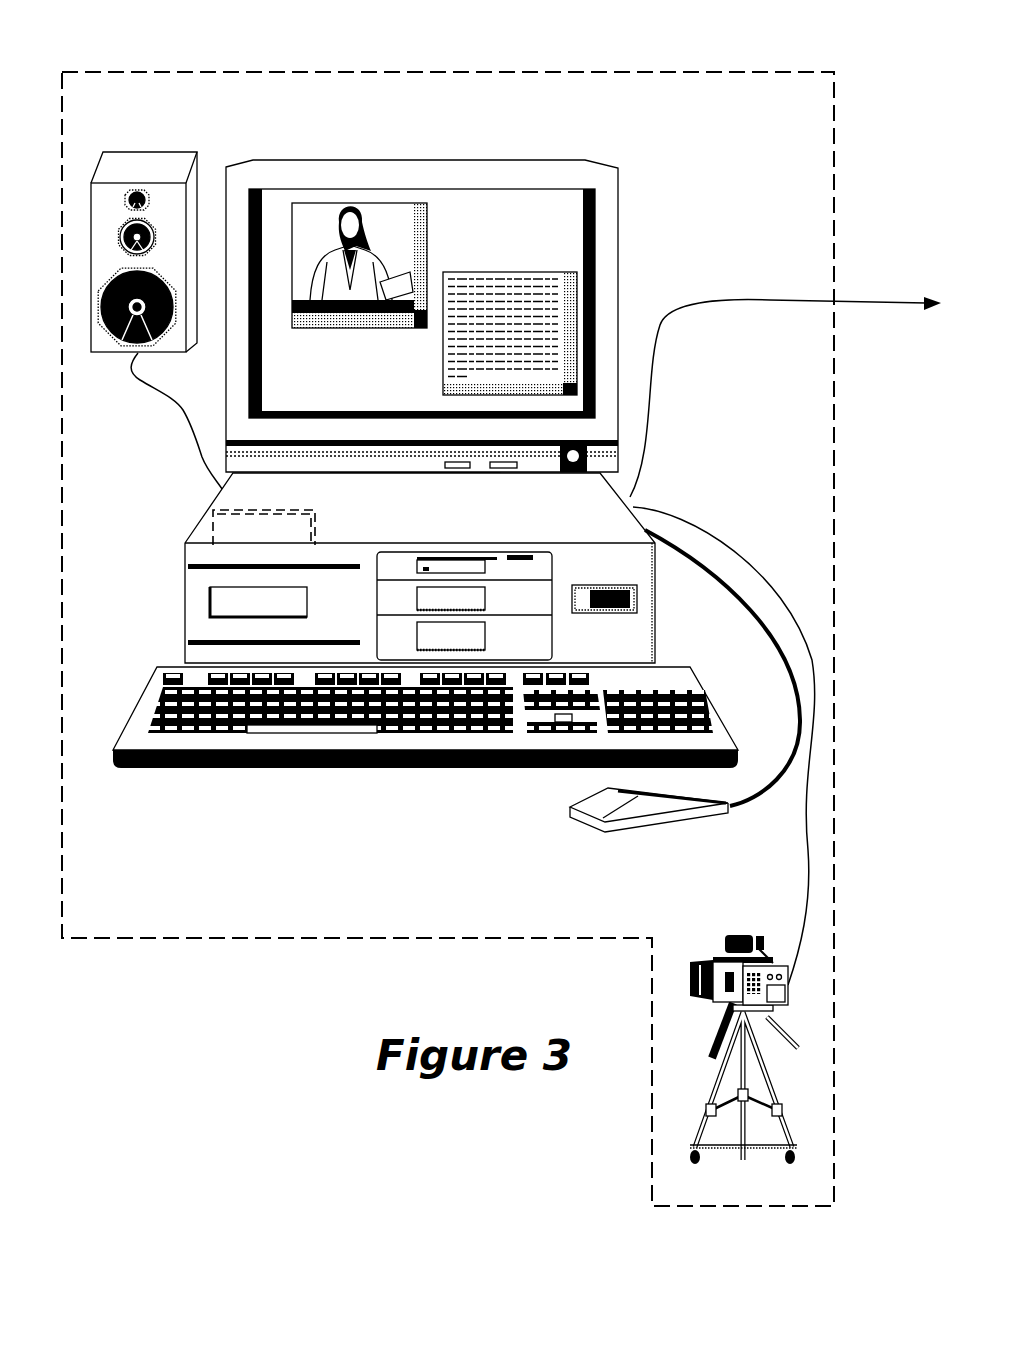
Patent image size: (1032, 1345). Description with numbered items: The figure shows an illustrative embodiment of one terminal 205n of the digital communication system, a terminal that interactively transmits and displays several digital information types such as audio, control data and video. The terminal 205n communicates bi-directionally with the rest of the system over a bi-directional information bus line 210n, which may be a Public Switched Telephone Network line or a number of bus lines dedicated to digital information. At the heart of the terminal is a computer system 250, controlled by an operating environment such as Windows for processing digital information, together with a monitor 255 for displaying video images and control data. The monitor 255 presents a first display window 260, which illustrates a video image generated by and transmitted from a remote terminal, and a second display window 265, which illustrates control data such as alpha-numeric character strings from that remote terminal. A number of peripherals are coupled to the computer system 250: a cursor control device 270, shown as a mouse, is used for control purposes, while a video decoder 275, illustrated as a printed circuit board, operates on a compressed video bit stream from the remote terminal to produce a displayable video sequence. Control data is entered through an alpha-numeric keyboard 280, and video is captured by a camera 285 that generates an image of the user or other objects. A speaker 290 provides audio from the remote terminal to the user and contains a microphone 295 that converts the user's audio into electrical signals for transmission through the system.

The terminal 205n is at (323, 62).
The bi-directional information bus line 210n is at (895, 307).
The computer system 250 is at (198, 583).
The monitor 255 is at (590, 134).
The first display window 260 is at (333, 325).
The second display window 265 is at (516, 272).
The cursor control device 270 is at (678, 820).
The video decoder 275 is at (233, 509).
The alpha-numeric keyboard 280 is at (212, 735).
The camera 285 is at (740, 935).
The speaker 290 is at (170, 158).
The microphone 295 is at (137, 200).